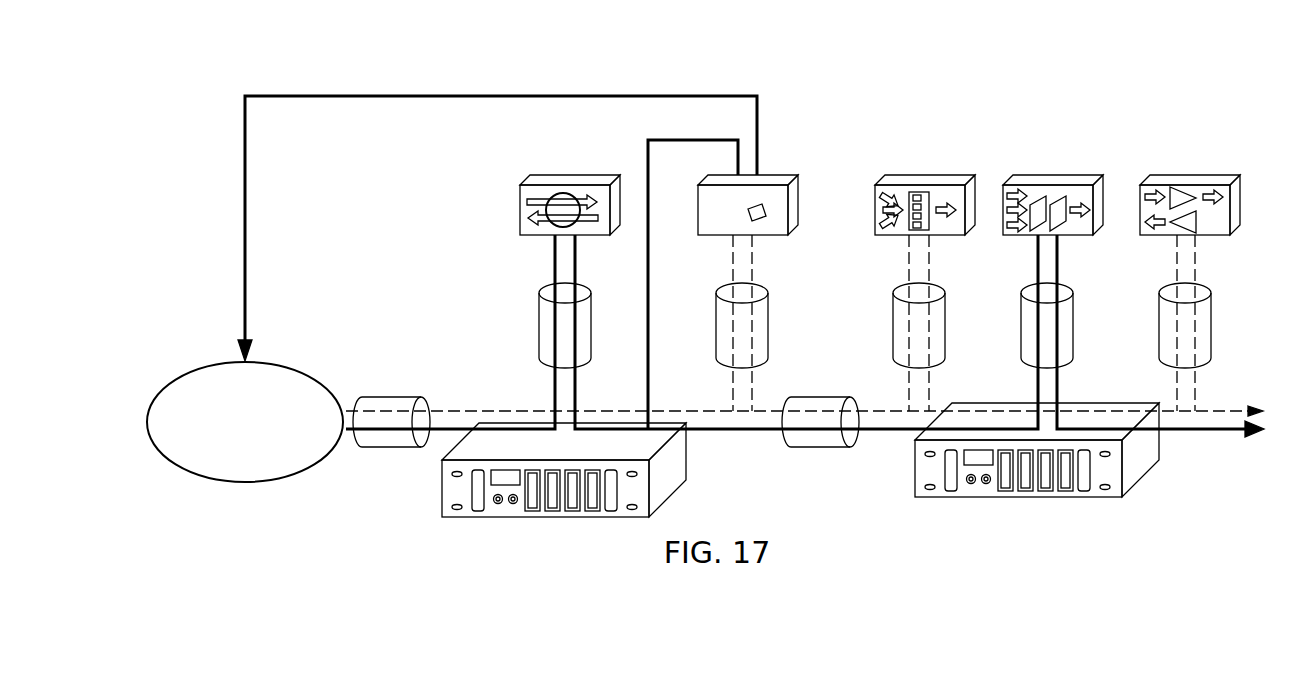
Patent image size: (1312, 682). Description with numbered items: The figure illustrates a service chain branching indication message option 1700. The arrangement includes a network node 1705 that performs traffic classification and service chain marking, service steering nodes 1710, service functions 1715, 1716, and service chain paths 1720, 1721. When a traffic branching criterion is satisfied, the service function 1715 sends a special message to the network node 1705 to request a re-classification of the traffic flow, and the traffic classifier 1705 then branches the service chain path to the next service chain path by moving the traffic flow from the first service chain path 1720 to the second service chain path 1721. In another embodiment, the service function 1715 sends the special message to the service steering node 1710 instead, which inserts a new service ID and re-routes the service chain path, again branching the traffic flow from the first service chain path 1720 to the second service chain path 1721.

The service chain branching indication message option 1700 is at (1145, 57).
The network node 1705 is at (209, 365).
The service steering node 1710 is at (440, 490).
The service function 1715 is at (1196, 152).
The service function 1716 is at (566, 175).
The first service chain path 1720 is at (808, 412).
The second service chain path 1721 is at (812, 447).